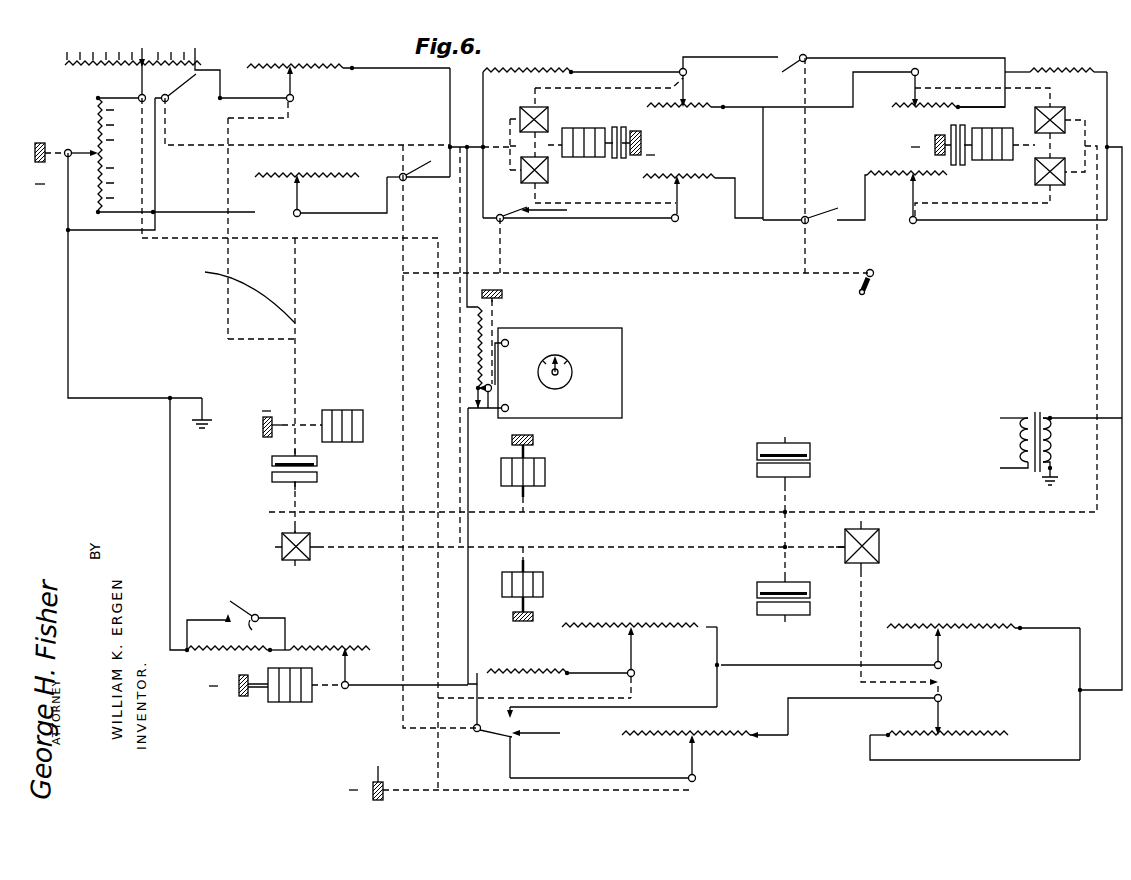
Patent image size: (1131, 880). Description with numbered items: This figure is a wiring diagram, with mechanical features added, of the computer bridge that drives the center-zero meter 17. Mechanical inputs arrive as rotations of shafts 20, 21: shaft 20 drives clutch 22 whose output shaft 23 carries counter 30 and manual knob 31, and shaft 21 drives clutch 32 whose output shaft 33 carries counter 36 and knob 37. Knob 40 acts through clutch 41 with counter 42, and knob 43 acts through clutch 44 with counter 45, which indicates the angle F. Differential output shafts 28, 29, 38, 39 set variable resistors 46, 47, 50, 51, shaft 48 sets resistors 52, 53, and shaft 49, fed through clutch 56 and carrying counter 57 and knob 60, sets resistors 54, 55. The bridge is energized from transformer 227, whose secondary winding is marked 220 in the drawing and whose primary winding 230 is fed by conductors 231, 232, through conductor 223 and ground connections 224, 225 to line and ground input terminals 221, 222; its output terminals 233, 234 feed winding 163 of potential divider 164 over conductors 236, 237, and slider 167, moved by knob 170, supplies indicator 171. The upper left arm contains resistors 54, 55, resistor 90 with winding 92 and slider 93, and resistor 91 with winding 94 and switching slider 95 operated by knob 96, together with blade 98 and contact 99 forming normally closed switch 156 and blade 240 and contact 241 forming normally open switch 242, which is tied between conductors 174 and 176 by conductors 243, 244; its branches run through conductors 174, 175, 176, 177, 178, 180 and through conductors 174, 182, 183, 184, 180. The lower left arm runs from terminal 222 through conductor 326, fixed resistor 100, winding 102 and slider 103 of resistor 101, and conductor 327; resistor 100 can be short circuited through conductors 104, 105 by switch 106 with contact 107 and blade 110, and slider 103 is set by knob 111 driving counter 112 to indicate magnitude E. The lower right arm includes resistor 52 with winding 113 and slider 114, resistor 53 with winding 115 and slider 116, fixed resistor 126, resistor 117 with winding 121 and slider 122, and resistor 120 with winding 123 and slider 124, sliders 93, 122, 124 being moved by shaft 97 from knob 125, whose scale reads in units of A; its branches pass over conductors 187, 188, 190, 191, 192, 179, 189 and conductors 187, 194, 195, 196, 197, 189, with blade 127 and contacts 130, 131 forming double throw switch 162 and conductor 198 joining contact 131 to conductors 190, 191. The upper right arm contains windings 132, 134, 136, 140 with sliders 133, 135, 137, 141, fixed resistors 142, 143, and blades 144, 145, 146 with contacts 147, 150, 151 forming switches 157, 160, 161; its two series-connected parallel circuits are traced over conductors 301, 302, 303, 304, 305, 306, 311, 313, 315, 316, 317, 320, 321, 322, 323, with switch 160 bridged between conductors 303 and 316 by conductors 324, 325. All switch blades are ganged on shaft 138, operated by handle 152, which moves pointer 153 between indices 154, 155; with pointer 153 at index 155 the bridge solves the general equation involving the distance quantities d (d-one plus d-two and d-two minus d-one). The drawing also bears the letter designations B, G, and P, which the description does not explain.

The variable resistor 90 is at (78, 69).
The variable resistor 91 is at (90, 143).
The winding 92 is at (172, 86).
The slider 93 is at (142, 82).
The winding 94 is at (83, 212).
The switching slider 95 is at (86, 160).
The knob 96 is at (37, 143).
The shaft 97 is at (196, 243).
The switch blade 98 is at (402, 160).
The fixed contact 99 is at (426, 166).
The fixed resistor 100 is at (214, 657).
The variable resistor 101 is at (350, 641).
The winding 102 is at (320, 647).
The slider 103 is at (356, 680).
The conductor 104 is at (186, 620).
The conductor 105 is at (290, 623).
The switch 106 is at (246, 604).
The fixed contact 107 is at (232, 620).
The switch blade 110 is at (264, 631).
The manual knob 111 is at (244, 696).
The counter 112 is at (294, 702).
The winding 113 is at (908, 625).
The slider 114 is at (942, 647).
The winding 115 is at (1008, 732).
The slider 116 is at (924, 716).
The variable resistor 117 is at (646, 641).
The variable resistor 120 is at (680, 742).
The winding 121 is at (668, 632).
The slider 122 is at (617, 652).
The winding 123 is at (644, 736).
The slider 124 is at (708, 758).
The manual knob 125 is at (376, 773).
The fixed resistor 126 is at (526, 669).
The switch blade 127 is at (496, 738).
The fixed contact 130 is at (532, 743).
The fixed contact 131 is at (528, 711).
The winding 132 is at (644, 100).
The slider 133 is at (688, 86).
The winding 134 is at (696, 188).
The slider 135 is at (670, 190).
The winding 136 is at (894, 114).
The slider 137 is at (920, 82).
The shaft 138 is at (302, 136).
The winding 140 is at (918, 178).
The slider 141 is at (926, 210).
The fixed resistor 142 is at (534, 72).
The fixed resistor 143 is at (1074, 64).
The switch blade 144 is at (524, 226).
The switch blade 145 is at (785, 79).
The switch blade 146 is at (766, 201).
The fixed contact 147 is at (554, 212).
The fixed contact 150 is at (786, 62).
The fixed contact 151 is at (852, 196).
The handle 152 is at (868, 296).
The pointer 153 is at (886, 274).
The index 154 is at (858, 248).
The index 155 is at (877, 256).
The single pole single throw switch 156 is at (416, 188).
The single pole single throw switch 157 is at (518, 222).
The single pole single throw switch 160 is at (806, 54).
The single pole single throw switch 161 is at (828, 221).
The single pole double throw switch 162 is at (552, 740).
The winding 163 is at (530, 308).
The potential divider 164 is at (474, 384).
The slider 167 is at (488, 410).
The manual knob 170 is at (502, 298).
The indicator 171 is at (622, 335).
The indicator 17 is at (576, 372).
The conductor 174 is at (68, 323).
The conductor 175 is at (120, 98).
The conductor 176 is at (220, 82).
The conductor 177 is at (260, 98).
The conductor 178 is at (438, 72).
The conductor 179 is at (480, 671).
The conductor 180 is at (450, 144).
The conductor 182 is at (166, 216).
The conductor 183 is at (334, 214).
The conductor 184 is at (452, 184).
The conductor 187 is at (1110, 538).
The conductor 188 is at (1066, 627).
The conductor 189 is at (462, 708).
The conductor 190 is at (774, 664).
The conductor 191 is at (724, 656).
The conductor 192 is at (582, 670).
The conductor 194 is at (1050, 764).
The conductor 195 is at (860, 706).
The conductor 196 is at (590, 778).
The conductor 197 is at (498, 718).
The conductor 198 is at (680, 707).
The shaft 20 is at (786, 620).
The shaft 21 is at (788, 444).
The clutch 22 is at (757, 591).
The output shaft 23 is at (800, 564).
The output shaft 28 is at (600, 90).
The output shaft 29 is at (588, 202).
The counter 30 is at (544, 571).
The manually rotatable knob 31 is at (534, 614).
The clutch 32 is at (706, 462).
The output shaft 33 is at (1060, 168).
The counter 36 is at (544, 462).
The manually rotatable knob 37 is at (534, 440).
The output shaft 38 is at (980, 84).
The output shaft 39 is at (1000, 203).
The manual knob 40 is at (638, 132).
The clutch 41 is at (618, 158).
The counter 42 is at (588, 156).
The manual knob 43 is at (934, 150).
The clutch 44 is at (952, 134).
The counter 45 is at (998, 160).
The variable resistor 46 is at (704, 102).
The variable resistor 47 is at (682, 198).
The output shaft 48 is at (854, 630).
The output shaft 49 is at (220, 195).
The variable resistor 50 is at (908, 100).
The variable resistor 51 is at (884, 181).
The variable resistor 52 is at (950, 625).
The variable resistor 53 is at (968, 727).
The variable resistor 54 is at (330, 82).
The variable resistor 55 is at (338, 180).
The clutch 56 is at (272, 470).
The counter 57 is at (348, 410).
The manually operable knob 60 is at (264, 430).
The secondary winding 220 is at (1052, 460).
The line input terminal 221 is at (1110, 420).
The ground input terminal 222 is at (170, 398).
The conductor 223 is at (1088, 416).
The ground connection 224 is at (206, 410).
The ground connection 225 is at (1056, 490).
The transformer 227 is at (1032, 410).
The primary winding 230 is at (1020, 468).
The conductor 231 is at (1000, 468).
The conductor 232 is at (1000, 418).
The output terminal 233 is at (466, 142).
The output terminal 234 is at (468, 683).
The conductor 236 is at (468, 236).
The conductor 237 is at (468, 600).
The switch blade 240 is at (182, 100).
The fixed contact 241 is at (184, 94).
The single pole single throw switch 242 is at (182, 103).
The conductor 243 is at (156, 188).
The conductor 244 is at (218, 114).
The conductor 301 is at (1098, 330).
The conductor 302 is at (1102, 90).
The conductor 303 is at (1020, 64).
The conductor 304 is at (990, 106).
The conductor 305 is at (836, 108).
The conductor 306 is at (766, 130).
The conductor 311 is at (1008, 224).
The conductor 313 is at (784, 224).
The conductor 315 is at (732, 125).
The conductor 316 is at (644, 72).
The conductor 317 is at (486, 104).
The conductor 320 is at (483, 144).
The conductor 321 is at (736, 222).
The conductor 322 is at (631, 224).
The conductor 323 is at (484, 190).
The conductor 324 is at (876, 58).
The conductor 325 is at (686, 58).
The conductor 326 is at (170, 487).
The conductor 327 is at (406, 684).
The scale units A is at (355, 783).
The motor B is at (278, 416).
The magnitude E is at (238, 683).
The angle F is at (928, 143).
The point G is at (891, 232).
The point P is at (854, 232).
The distance quantities d1 and d2 d is at (286, 539).